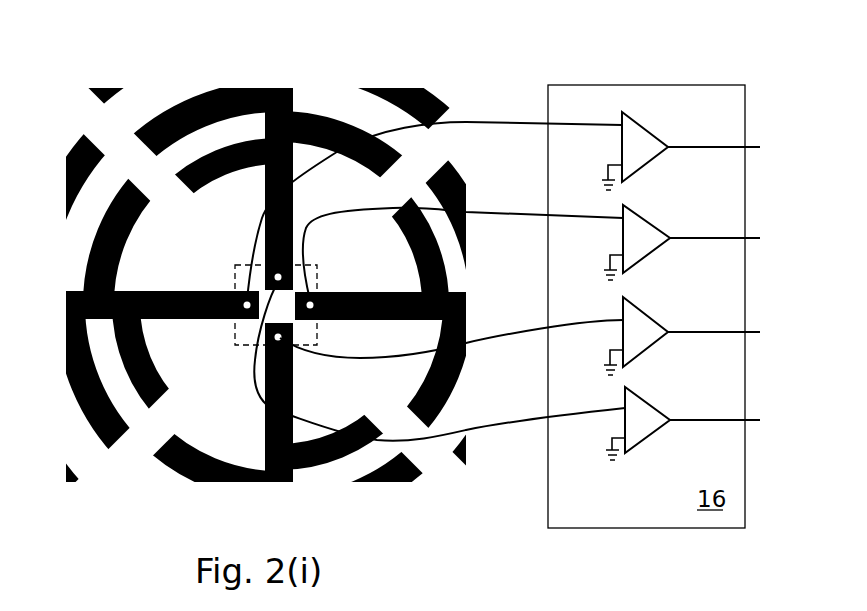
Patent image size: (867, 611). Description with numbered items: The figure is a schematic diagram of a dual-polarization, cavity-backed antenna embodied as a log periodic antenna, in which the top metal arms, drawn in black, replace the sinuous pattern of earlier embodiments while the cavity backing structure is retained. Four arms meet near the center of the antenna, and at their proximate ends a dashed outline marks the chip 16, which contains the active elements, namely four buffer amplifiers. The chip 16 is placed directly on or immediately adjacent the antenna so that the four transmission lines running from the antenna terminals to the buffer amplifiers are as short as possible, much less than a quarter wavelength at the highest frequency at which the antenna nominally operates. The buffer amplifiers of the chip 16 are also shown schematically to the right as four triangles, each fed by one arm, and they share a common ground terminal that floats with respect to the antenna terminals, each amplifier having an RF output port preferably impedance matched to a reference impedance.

The chip 16 is at (318, 343).